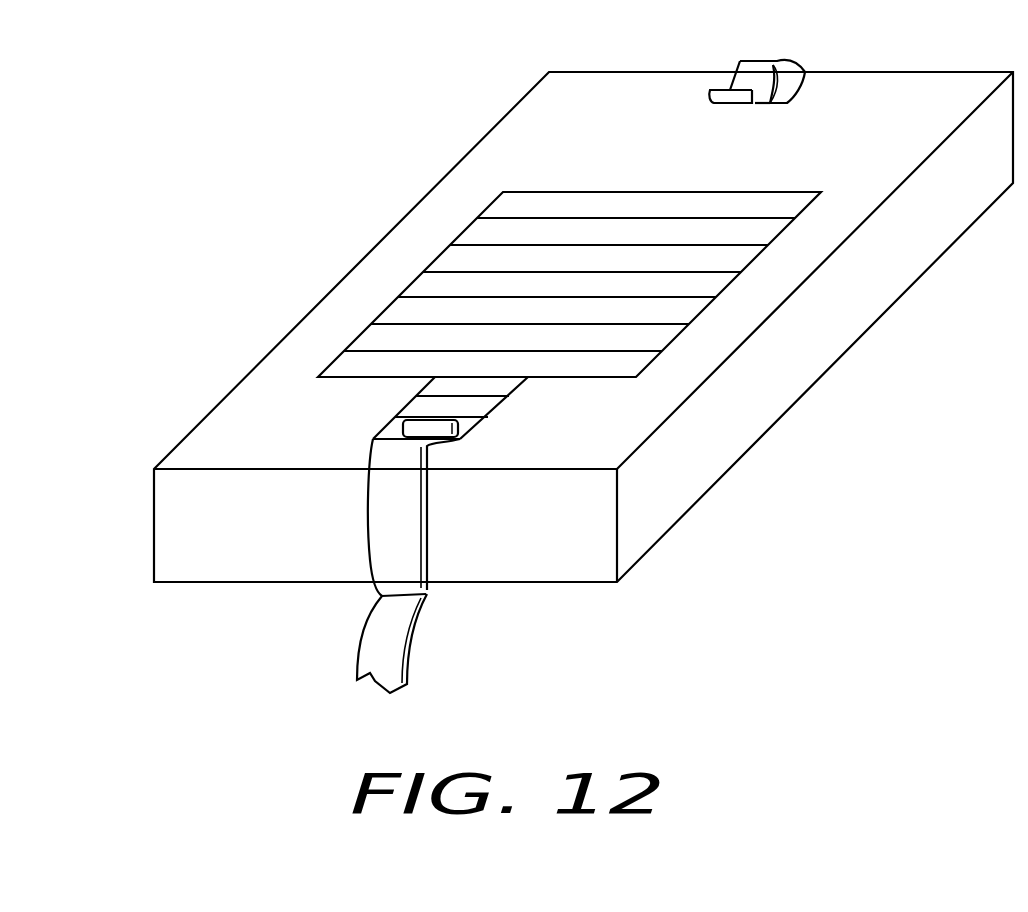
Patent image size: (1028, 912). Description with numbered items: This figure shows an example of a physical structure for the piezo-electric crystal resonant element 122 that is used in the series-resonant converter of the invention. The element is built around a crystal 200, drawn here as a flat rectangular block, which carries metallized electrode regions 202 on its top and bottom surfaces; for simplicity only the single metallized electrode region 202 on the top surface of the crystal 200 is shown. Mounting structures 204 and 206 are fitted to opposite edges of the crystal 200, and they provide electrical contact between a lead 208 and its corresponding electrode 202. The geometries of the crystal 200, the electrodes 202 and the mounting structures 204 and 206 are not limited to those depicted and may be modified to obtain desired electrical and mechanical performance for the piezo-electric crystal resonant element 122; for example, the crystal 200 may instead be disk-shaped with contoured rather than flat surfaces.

The piezo-electric crystal resonant element 122 is at (362, 215).
The crystal 200 is at (827, 348).
The metallized electrode region 202 is at (624, 210).
The mounting structure 204 is at (373, 449).
The mounting structure 206 is at (767, 58).
The lead 208 is at (370, 641).